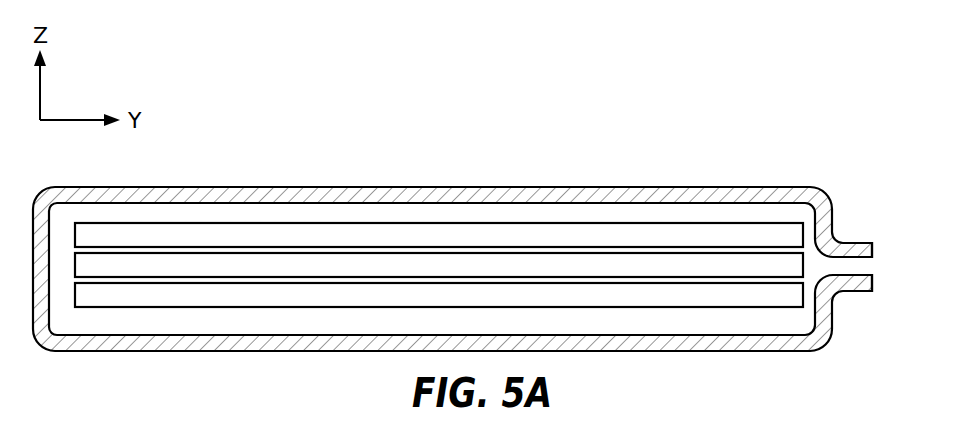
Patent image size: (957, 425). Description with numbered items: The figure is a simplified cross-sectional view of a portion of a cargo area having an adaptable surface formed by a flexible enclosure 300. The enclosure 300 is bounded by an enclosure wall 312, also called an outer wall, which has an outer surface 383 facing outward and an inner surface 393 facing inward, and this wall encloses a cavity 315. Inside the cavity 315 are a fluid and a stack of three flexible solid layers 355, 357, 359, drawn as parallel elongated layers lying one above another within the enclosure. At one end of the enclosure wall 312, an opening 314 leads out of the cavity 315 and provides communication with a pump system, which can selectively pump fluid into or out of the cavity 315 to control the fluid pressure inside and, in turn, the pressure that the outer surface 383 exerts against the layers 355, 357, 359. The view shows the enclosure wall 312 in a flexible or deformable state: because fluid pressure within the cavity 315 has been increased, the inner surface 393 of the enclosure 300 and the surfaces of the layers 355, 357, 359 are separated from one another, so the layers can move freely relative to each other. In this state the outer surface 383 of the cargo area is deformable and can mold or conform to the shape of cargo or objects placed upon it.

The flexible enclosure 300 is at (389, 74).
The enclosure wall 312 is at (630, 197).
The opening 314 is at (852, 265).
The cavity 315 is at (217, 222).
The flexible solid layer 355 is at (437, 237).
The flexible solid layer 357 is at (547, 263).
The flexible solid layer 359 is at (717, 293).
The outer surface 383 is at (317, 187).
The inner surface 393 is at (272, 203).